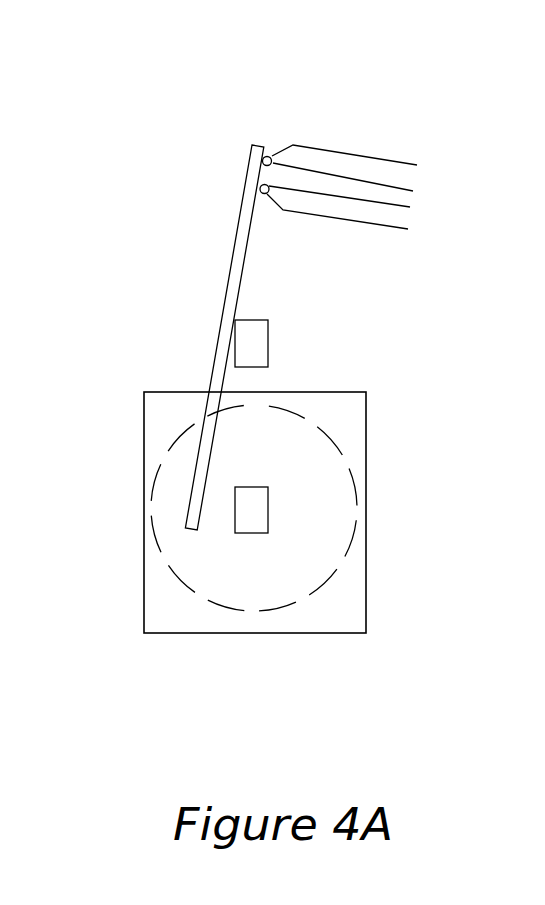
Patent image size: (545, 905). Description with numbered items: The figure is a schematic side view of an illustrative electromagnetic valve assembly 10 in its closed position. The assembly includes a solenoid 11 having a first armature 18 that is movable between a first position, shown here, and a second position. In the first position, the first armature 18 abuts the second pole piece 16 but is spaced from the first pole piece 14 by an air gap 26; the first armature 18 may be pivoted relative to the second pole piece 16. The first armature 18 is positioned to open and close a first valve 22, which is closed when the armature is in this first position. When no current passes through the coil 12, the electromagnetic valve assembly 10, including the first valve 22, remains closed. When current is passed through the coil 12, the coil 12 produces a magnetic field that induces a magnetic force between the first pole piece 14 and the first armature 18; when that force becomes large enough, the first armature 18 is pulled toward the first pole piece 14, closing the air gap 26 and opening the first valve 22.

The electromagnetic valve assembly 10 is at (432, 71).
The solenoid 11 is at (402, 353).
The coil 12 is at (322, 452).
The first pole piece 14 is at (262, 508).
The second pole piece 16 is at (263, 343).
The first armature 18 is at (233, 271).
The first valve 22 is at (356, 216).
The air gap 26 is at (218, 512).